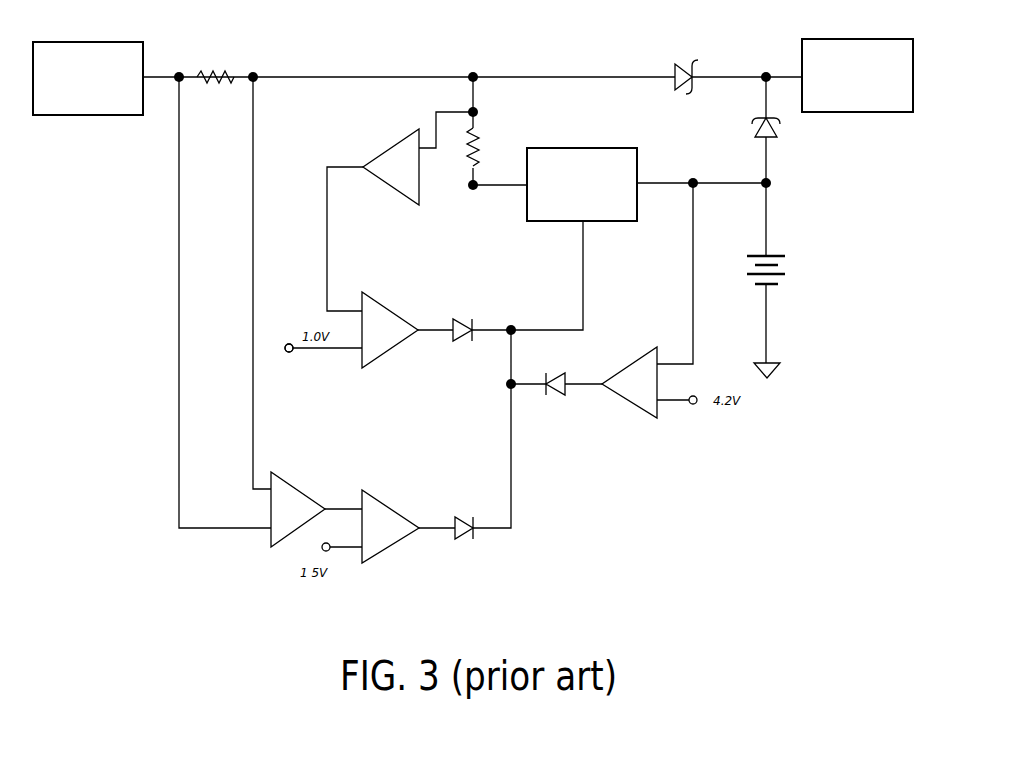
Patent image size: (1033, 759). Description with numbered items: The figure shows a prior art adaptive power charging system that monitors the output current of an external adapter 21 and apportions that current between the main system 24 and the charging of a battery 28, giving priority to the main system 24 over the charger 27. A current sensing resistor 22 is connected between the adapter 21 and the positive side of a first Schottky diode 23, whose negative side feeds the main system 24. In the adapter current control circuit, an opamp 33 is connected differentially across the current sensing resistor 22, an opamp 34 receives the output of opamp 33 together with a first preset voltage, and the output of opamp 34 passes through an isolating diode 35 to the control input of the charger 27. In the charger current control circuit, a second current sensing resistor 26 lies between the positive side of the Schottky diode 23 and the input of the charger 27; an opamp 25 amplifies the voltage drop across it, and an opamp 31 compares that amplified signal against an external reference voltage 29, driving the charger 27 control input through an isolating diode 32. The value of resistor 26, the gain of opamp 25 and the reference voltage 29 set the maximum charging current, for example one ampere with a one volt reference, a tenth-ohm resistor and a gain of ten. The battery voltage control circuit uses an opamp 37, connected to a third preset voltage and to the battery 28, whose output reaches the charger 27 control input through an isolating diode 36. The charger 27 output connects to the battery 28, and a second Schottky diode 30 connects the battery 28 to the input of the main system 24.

The external adapter 21 is at (89, 41).
The current sensing resistor 22 is at (221, 66).
The first Schottky diode 23 is at (683, 63).
The main system 24 is at (858, 39).
The opamp 25 is at (402, 140).
The current sensing resistor 26 is at (487, 147).
The charger 27 is at (583, 147).
The battery 28 is at (787, 266).
The external reference voltage 29 is at (287, 344).
The second Schottky diode 30 is at (779, 129).
The opamp 31 is at (380, 298).
The isolating diode 32 is at (466, 318).
The opamp 33 is at (290, 484).
The opamp 34 is at (387, 502).
The isolating diode 35 is at (464, 540).
The isolating diode 36 is at (556, 392).
The opamp 37 is at (633, 360).